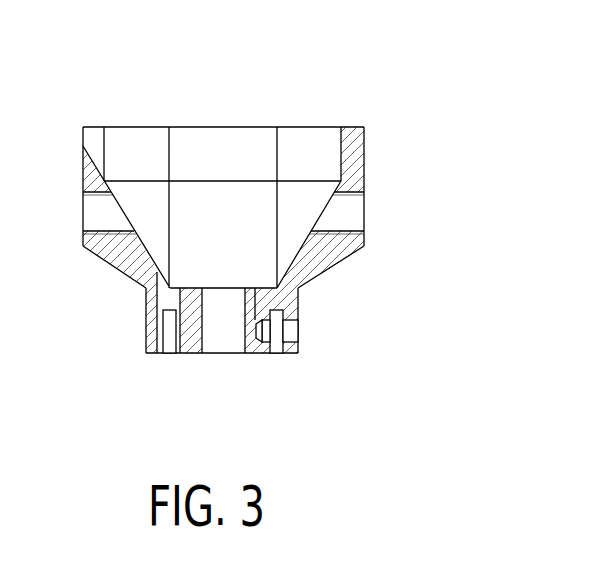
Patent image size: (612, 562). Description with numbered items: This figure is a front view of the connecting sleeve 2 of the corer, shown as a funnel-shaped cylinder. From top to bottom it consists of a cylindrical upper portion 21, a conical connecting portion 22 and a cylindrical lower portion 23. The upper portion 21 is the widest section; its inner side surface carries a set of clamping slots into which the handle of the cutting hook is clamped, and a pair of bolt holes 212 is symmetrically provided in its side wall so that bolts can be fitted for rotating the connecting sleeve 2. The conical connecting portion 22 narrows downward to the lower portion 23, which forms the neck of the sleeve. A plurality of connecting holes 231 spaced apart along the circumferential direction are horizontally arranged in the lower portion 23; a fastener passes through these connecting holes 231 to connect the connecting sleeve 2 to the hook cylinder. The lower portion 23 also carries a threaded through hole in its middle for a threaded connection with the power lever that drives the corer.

The connecting sleeve 2 is at (298, 140).
The upper portion 21 is at (364, 149).
The bolt hole 212 is at (367, 212).
The connecting portion 22 is at (368, 266).
The lower portion 23 is at (343, 309).
The connecting hole 231 is at (298, 331).